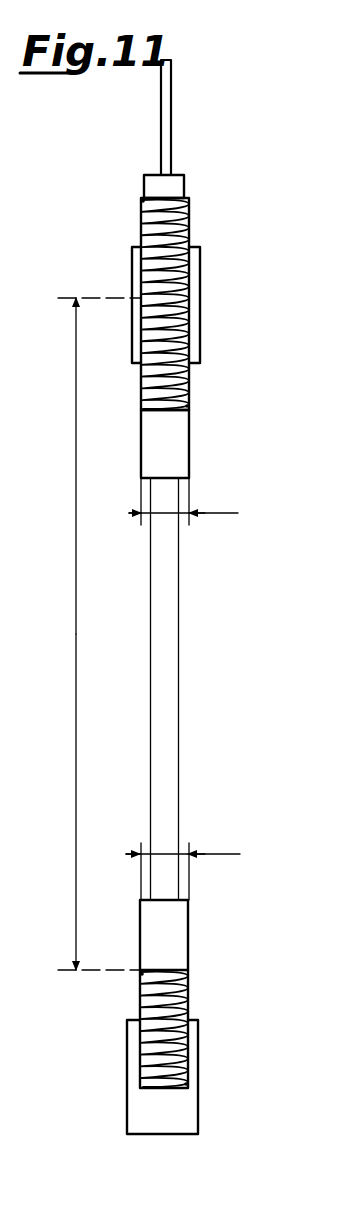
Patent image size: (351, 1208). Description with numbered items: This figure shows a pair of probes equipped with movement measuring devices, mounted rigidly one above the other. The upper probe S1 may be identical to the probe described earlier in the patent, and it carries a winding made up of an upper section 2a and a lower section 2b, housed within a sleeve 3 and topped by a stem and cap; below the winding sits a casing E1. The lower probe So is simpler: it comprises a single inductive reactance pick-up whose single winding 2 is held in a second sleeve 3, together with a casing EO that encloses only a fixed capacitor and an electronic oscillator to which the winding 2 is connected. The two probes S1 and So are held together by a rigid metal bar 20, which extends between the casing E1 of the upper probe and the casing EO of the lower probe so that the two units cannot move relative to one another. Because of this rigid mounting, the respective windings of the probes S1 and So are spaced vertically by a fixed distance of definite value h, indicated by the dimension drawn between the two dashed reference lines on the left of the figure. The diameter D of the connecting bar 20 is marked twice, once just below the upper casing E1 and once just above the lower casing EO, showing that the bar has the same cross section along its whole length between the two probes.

The single winding 2 is at (172, 1035).
The upper spring section 2a is at (176, 232).
The lower spring section 2b is at (175, 372).
The sleeve 3 is at (131, 270).
The rigid metal bar 20 is at (164, 686).
The probe S1 is at (203, 293).
The probe So is at (200, 1024).
The upper end piece E1 is at (173, 446).
The casing EO is at (172, 935).
The diameter D is at (183, 670).
The fixed distance h is at (94, 634).